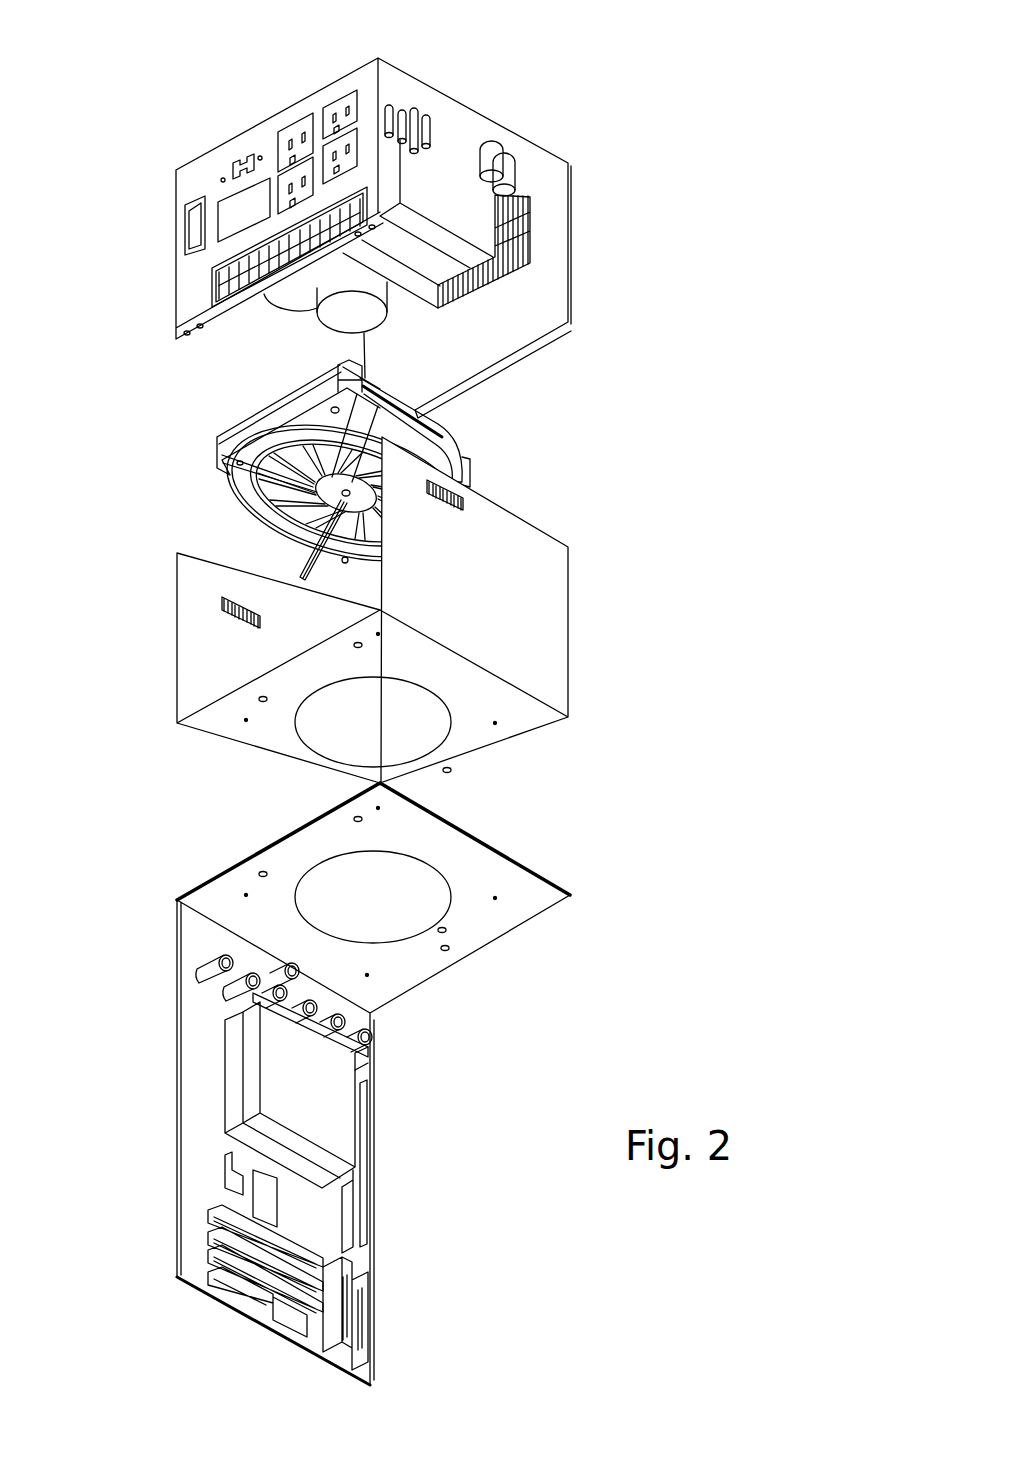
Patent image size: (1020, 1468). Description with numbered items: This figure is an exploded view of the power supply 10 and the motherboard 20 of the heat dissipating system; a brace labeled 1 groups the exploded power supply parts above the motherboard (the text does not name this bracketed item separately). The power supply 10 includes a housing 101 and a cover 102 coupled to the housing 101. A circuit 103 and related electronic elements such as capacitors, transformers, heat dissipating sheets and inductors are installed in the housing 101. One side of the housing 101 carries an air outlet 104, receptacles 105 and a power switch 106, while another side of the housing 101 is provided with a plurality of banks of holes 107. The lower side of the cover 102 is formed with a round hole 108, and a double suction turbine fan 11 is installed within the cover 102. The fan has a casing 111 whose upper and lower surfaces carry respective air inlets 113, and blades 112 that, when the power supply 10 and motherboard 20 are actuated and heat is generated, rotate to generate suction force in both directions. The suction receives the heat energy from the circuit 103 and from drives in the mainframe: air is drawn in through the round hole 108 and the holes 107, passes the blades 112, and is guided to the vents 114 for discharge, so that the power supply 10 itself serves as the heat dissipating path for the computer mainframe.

The power supply unit 1 is at (47, 280).
The power supply 10 is at (589, 419).
The double suction turbine fan 11 is at (468, 454).
The motherboard 20 is at (180, 1060).
The housing 101 is at (441, 94).
The cover 102 is at (560, 603).
The circuit 103 is at (443, 183).
The air outlet 104 is at (224, 277).
The receptacles 105 is at (278, 133).
The power switch 106 is at (190, 222).
The banks of holes 107 is at (528, 232).
The round hole 108 is at (312, 738).
The casing 111 is at (453, 430).
The blades 112 is at (278, 485).
The air inlets 113 is at (275, 507).
The vents 114 is at (250, 430).